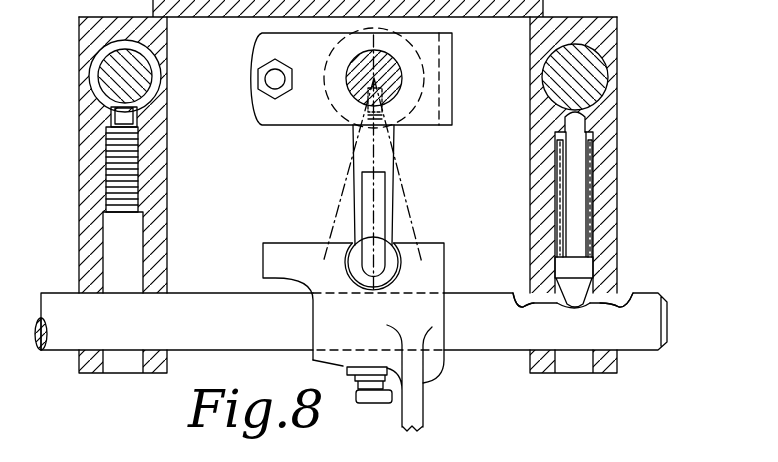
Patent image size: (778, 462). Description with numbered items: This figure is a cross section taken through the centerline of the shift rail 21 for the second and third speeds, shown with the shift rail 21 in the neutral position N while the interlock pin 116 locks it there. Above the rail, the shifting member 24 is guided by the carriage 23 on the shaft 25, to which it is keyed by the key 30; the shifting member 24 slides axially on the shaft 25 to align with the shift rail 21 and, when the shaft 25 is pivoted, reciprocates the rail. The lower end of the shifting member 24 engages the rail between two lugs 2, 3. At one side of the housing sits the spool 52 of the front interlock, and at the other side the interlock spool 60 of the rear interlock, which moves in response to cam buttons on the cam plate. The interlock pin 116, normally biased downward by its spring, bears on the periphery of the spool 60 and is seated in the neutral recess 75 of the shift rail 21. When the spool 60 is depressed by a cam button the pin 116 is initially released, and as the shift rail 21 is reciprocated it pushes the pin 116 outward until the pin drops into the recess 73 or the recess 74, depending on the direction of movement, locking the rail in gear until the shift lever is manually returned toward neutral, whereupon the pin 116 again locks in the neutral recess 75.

The yoke lug 2 is at (427, 248).
The yoke lug 3 is at (328, 248).
The shift rail 21 is at (215, 300).
The carriage 23 is at (452, 100).
The shifting member 24 is at (410, 110).
The shaft 25 is at (357, 62).
The key 30 is at (337, 108).
The spool 52 is at (107, 75).
The interlock spool 60 is at (601, 92).
The recess 73 is at (522, 297).
The recess 74 is at (627, 297).
The neutral recess 75 is at (576, 306).
The interlock pin 116 is at (578, 136).
The neutral position N is at (377, 256).